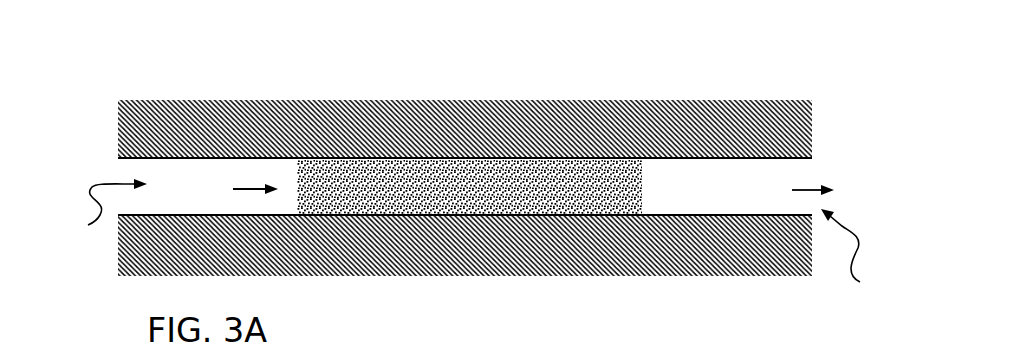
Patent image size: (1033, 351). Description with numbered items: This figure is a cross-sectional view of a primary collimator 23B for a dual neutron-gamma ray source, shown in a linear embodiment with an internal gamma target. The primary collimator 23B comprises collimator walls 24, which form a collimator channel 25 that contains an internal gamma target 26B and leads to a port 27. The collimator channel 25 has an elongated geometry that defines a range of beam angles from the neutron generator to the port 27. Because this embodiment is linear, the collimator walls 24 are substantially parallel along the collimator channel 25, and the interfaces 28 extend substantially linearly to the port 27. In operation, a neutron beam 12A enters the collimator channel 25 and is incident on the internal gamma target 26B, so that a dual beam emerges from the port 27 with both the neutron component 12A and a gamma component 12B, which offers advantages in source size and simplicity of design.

The primary collimator 23B is at (100, 72).
The collimator walls 24 is at (310, 118).
The collimator channel 25 is at (101, 217).
The internal gamma target 26B is at (517, 177).
The port 27 is at (858, 257).
The interfaces 28 is at (705, 148).
The neutron beam 12A is at (228, 189).
The gamma component 12B is at (756, 189).